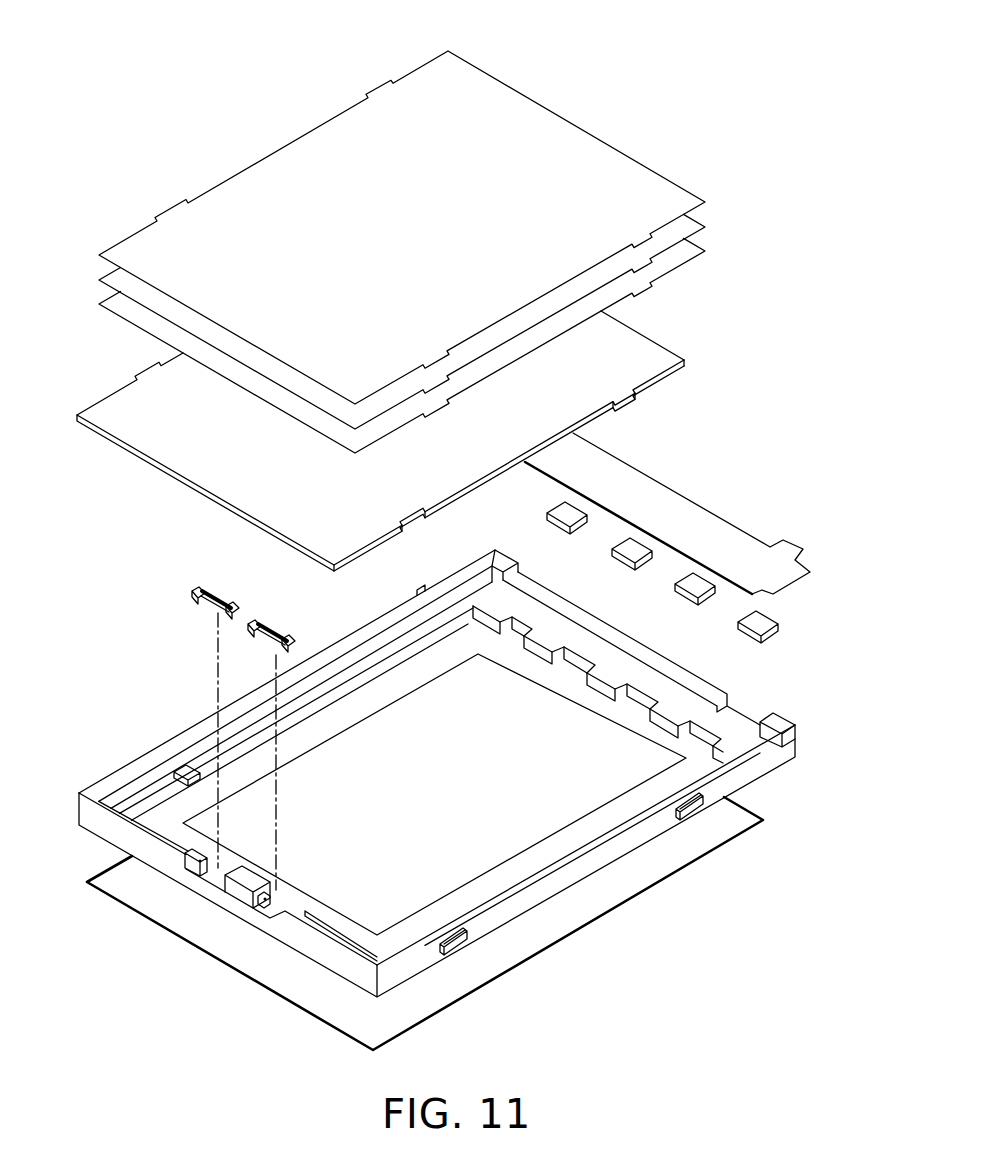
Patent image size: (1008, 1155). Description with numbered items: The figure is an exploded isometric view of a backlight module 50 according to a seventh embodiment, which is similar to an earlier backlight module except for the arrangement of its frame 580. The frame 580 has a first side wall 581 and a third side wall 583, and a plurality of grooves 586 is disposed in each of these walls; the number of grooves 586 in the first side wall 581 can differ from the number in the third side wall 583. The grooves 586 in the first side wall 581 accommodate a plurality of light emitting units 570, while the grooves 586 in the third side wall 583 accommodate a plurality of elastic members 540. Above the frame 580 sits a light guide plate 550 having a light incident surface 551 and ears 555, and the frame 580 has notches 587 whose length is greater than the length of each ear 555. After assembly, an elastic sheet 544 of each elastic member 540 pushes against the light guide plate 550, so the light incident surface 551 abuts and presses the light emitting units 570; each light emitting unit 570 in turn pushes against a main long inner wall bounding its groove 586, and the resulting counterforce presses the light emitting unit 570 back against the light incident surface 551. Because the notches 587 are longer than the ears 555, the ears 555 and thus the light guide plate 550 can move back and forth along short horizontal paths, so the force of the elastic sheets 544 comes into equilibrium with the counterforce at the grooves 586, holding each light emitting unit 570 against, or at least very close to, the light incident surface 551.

The backlight module 50 is at (448, 528).
The light guide plate 550 is at (652, 327).
The light incident surface 551 is at (417, 444).
The ear 555 is at (413, 525).
The elastic member 540 is at (201, 725).
The elastic sheet 544 is at (214, 596).
The light emitting unit 570 is at (757, 620).
The frame 580 is at (449, 783).
The first side wall 581 is at (617, 665).
The third side wall 583 is at (193, 866).
The groove 586 is at (703, 740).
The notch 587 is at (172, 762).